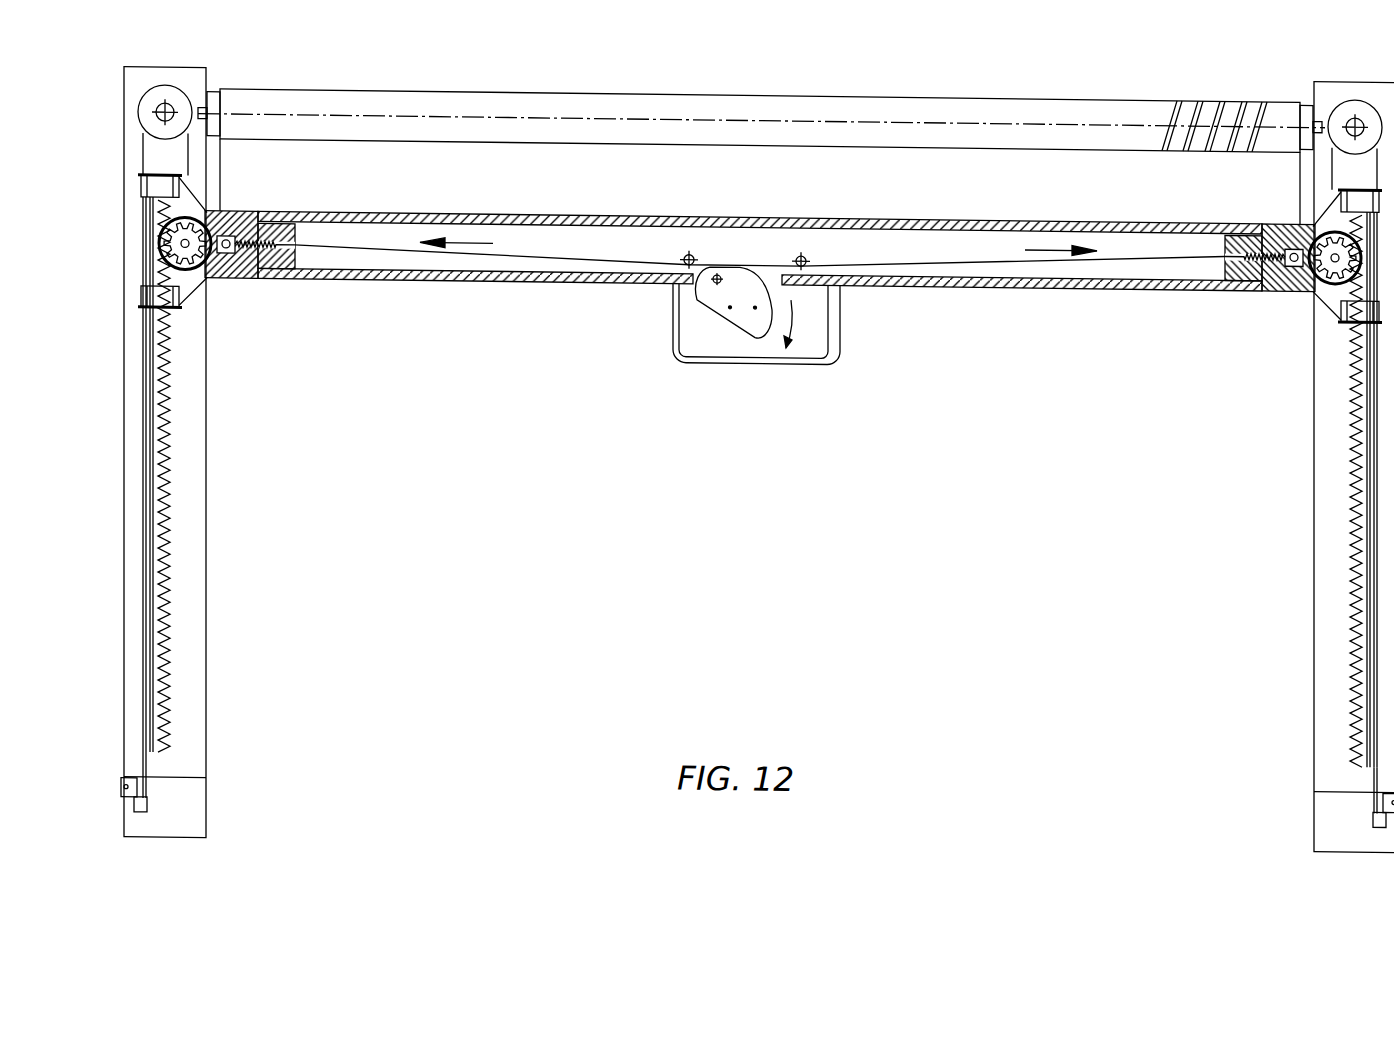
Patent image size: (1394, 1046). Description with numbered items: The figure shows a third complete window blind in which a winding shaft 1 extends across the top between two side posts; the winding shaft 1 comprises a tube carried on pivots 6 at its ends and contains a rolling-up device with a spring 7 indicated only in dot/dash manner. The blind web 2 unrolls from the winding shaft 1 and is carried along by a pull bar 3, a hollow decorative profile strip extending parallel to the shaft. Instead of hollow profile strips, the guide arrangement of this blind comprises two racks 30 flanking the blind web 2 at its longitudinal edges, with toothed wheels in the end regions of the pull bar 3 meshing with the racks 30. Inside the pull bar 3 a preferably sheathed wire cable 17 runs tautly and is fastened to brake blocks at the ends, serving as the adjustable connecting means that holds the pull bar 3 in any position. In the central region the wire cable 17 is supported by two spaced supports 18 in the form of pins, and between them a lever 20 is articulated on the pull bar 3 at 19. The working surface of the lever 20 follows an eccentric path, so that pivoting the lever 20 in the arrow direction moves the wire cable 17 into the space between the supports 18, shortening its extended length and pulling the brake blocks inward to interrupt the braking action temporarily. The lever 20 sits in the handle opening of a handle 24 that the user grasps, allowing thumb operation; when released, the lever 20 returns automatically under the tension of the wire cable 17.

The winding shaft 1 is at (263, 96).
The blind web 2 is at (300, 161).
The pull bar 3 is at (1115, 270).
The pivots 6 is at (212, 90).
The spring 7 is at (1222, 98).
The wire cable 17 is at (328, 247).
The supports 18 is at (800, 247).
The articulation point 19 is at (713, 275).
The lever 20 is at (730, 298).
The handle 24 is at (722, 350).
The racks 30 is at (165, 459).